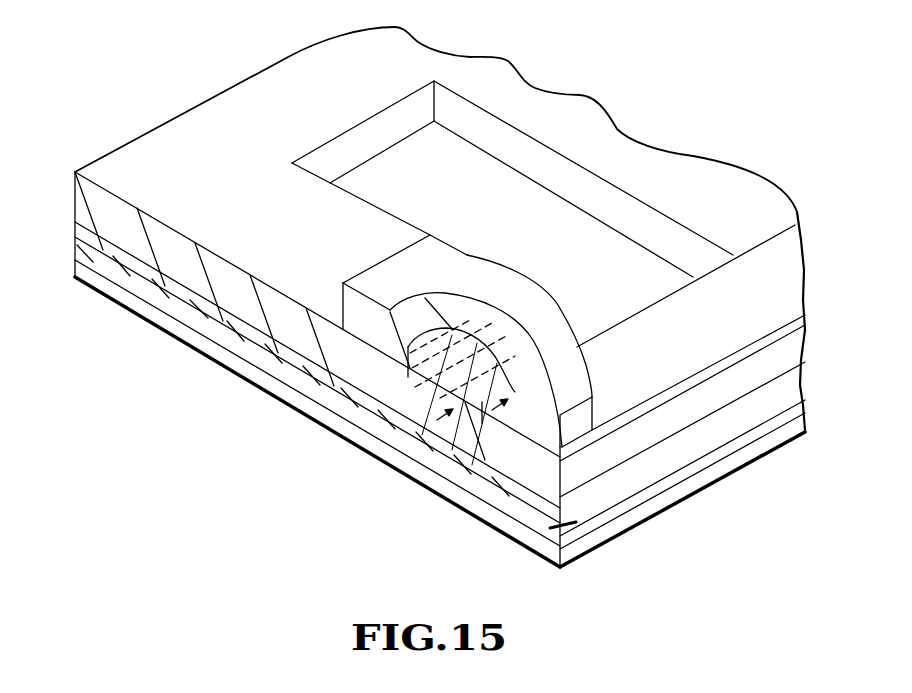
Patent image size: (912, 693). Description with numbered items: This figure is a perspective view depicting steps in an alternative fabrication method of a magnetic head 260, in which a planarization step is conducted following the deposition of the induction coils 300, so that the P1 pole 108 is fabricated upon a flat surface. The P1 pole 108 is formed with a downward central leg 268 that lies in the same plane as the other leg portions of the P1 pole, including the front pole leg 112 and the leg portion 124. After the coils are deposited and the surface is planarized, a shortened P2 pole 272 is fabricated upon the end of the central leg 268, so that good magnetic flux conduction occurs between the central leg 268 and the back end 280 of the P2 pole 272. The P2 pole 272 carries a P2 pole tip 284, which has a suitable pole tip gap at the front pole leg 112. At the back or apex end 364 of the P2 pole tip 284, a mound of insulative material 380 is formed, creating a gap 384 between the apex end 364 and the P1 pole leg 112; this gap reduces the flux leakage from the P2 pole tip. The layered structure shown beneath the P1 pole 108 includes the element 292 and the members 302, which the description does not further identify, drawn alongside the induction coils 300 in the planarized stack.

The P1 pole 108 is at (510, 75).
The magnetic head 260 is at (683, 70).
The central leg 268 is at (340, 214).
The back end 280 is at (378, 270).
The P2 pole 272 is at (478, 268).
The P2 pole tip 284 is at (576, 393).
The apex end 364 is at (502, 360).
The front pole leg 112 is at (510, 445).
The intermediate layer 292 is at (613, 423).
The leg portion 124 is at (80, 207).
The induction coils 300 is at (207, 303).
The cross members 302 is at (237, 330).
The mound of insulative material 380 is at (425, 458).
The gap 384 is at (482, 435).